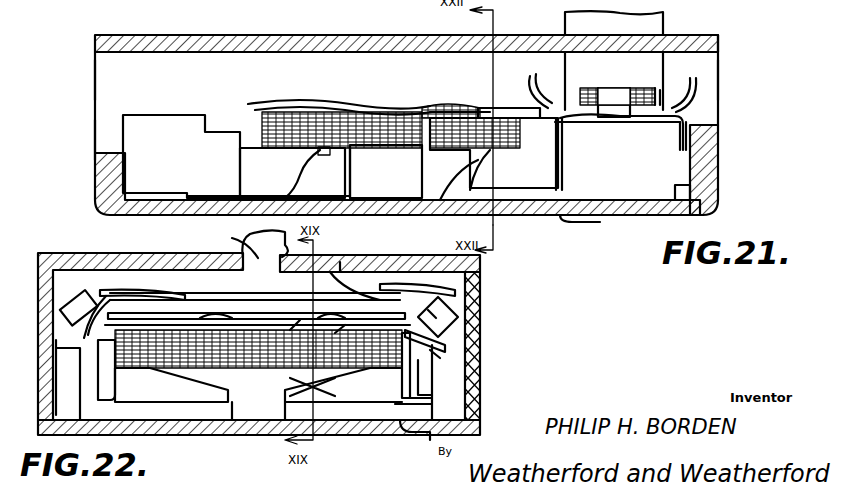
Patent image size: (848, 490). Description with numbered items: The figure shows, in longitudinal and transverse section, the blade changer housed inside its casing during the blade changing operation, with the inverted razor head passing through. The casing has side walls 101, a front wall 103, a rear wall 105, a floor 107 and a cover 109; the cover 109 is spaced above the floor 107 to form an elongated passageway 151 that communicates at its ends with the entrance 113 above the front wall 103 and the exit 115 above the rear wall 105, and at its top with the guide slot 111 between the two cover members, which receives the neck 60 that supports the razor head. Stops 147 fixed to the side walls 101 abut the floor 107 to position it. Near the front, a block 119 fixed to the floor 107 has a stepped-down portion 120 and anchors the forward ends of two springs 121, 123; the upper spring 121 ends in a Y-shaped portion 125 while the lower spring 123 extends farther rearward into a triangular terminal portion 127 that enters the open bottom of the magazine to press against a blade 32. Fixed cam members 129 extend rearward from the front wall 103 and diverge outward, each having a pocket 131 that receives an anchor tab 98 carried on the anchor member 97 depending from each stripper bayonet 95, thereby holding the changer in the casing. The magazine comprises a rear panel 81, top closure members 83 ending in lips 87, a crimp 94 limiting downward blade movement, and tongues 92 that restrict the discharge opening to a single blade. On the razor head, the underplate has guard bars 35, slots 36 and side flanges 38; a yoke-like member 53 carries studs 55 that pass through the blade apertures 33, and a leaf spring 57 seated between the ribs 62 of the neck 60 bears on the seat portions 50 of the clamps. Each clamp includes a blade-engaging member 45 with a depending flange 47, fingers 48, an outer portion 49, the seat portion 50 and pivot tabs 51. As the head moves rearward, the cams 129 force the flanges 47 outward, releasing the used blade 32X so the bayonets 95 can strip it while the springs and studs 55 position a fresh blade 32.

In FIG. 21, the cover 109 is at (305, 40).
In FIG. 22, the cover 109 is at (385, 262).
In FIG. 21, the front wall 103 is at (100, 176).
In FIG. 21, the rear wall 105 is at (704, 165).
In FIG. 21, the floor 107 is at (574, 222).
In FIG. 22, the floor 107 is at (400, 433).
In FIG. 21, the entrance 113 is at (92, 80).
In FIG. 21, the exit 115 is at (718, 70).
In FIG. 21, the passageway 151 is at (245, 66).
In FIG. 21, the block 119 is at (140, 138).
In FIG. 21, the neck 60 is at (640, 24).
In FIG. 21, the stepped-down portion 120 is at (226, 133).
In FIG. 21, the stripper bayonets 95 is at (335, 103).
In FIG. 21, the used blade 32X is at (270, 116).
In FIG. 21, the anchor tab 98 is at (318, 150).
In FIG. 22, the anchor tab 98 is at (450, 400).
In FIG. 21, the spring member 121 is at (292, 186).
In FIG. 21, the spring member 123 is at (268, 173).
In FIG. 22, the spring member 123 is at (240, 425).
In FIG. 21, the Y-shaped portion 125 is at (358, 148).
In FIG. 21, the pocket 131 is at (372, 173).
In FIG. 21, the lip 87 is at (462, 112).
In FIG. 22, the lip 87 is at (324, 325).
In FIG. 21, the yoke-like member 53 is at (488, 112).
In FIG. 21, the terminal portion 127 is at (490, 158).
In FIG. 22, the terminal portion 127 is at (320, 386).
In FIG. 21, the crimp 94 is at (465, 175).
In FIG. 21, the rear panel 81 is at (563, 160).
In FIG. 21, the guard bars 35 is at (528, 90).
In FIG. 21, the ribs 62 is at (558, 74).
In FIG. 21, the leaf spring member 57 is at (606, 90).
In FIG. 22, the leaf spring member 57 is at (348, 272).
In FIG. 21, the studs 55 is at (648, 79).
In FIG. 22, the studs 55 is at (236, 318).
In FIG. 21, the slots 36 is at (683, 84).
In FIG. 22, the slots 36 is at (210, 312).
In FIG. 21, the blade-engaging member 45 is at (602, 134).
In FIG. 22, the blade-engaging member 45 is at (452, 340).
In FIG. 21, the tongues 92 is at (676, 130).
In FIG. 21, the stops 147 is at (675, 191).
In FIG. 22, the guide slot 111 is at (236, 238).
In FIG. 22, the side walls 101 is at (44, 300).
In FIG. 22, the fixed cam members 129 is at (52, 362).
In FIG. 22, the tabs 51 is at (86, 295).
In FIG. 22, the seat portion 50 is at (135, 292).
In FIG. 22, the flange 47 is at (62, 348).
In FIG. 22, the top closure members 83 is at (176, 328).
In FIG. 22, the razor blade 32 is at (155, 368).
In FIG. 22, the apertures 33 is at (240, 368).
In FIG. 22, the side flanges 38 is at (446, 304).
In FIG. 22, the outer portion 49 is at (448, 318).
In FIG. 22, the blade-engaging fingers 48 is at (448, 355).
In FIG. 22, the anchor member 97 is at (448, 372).